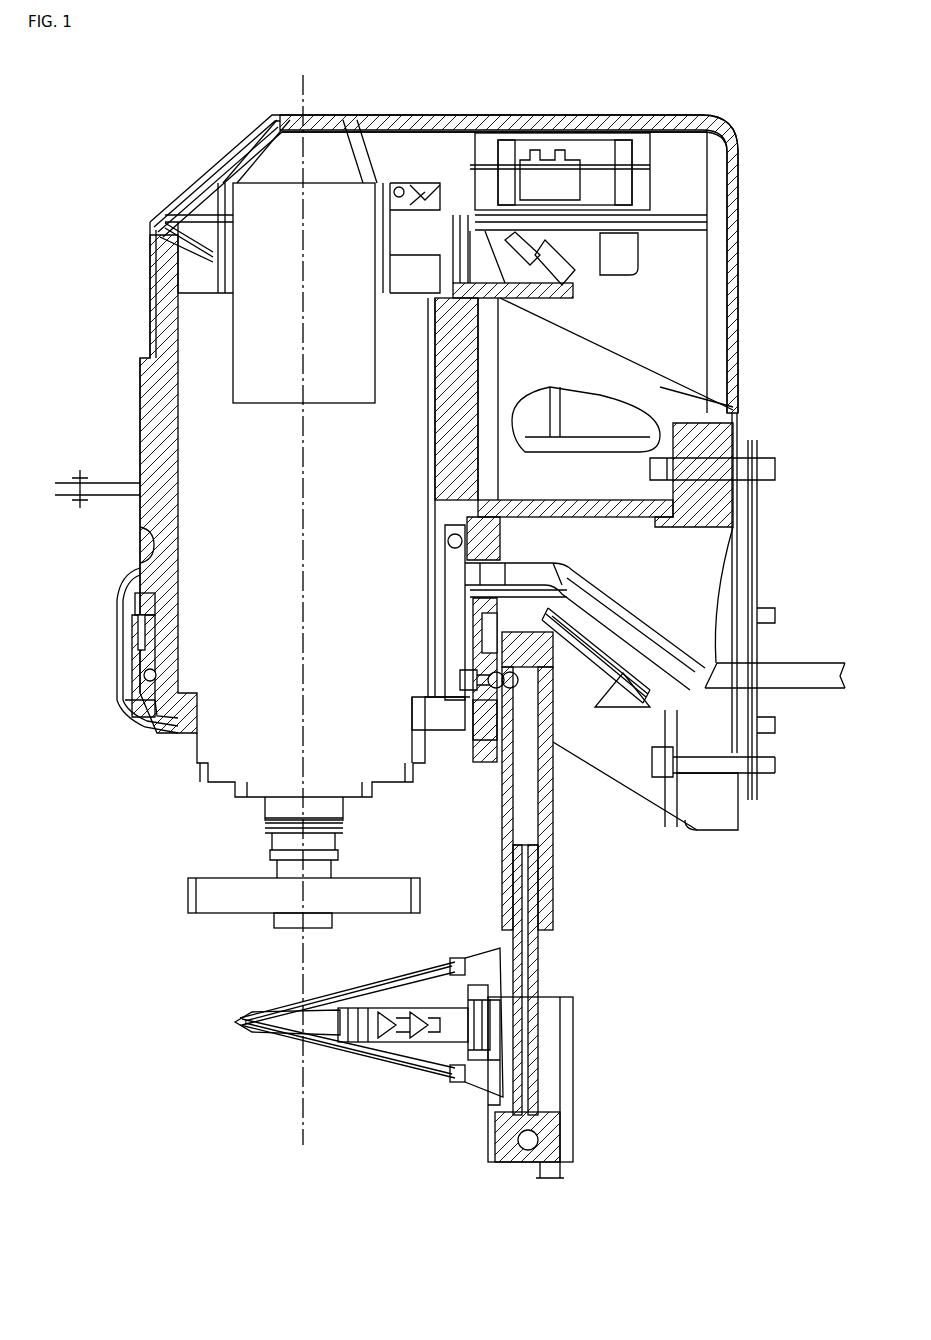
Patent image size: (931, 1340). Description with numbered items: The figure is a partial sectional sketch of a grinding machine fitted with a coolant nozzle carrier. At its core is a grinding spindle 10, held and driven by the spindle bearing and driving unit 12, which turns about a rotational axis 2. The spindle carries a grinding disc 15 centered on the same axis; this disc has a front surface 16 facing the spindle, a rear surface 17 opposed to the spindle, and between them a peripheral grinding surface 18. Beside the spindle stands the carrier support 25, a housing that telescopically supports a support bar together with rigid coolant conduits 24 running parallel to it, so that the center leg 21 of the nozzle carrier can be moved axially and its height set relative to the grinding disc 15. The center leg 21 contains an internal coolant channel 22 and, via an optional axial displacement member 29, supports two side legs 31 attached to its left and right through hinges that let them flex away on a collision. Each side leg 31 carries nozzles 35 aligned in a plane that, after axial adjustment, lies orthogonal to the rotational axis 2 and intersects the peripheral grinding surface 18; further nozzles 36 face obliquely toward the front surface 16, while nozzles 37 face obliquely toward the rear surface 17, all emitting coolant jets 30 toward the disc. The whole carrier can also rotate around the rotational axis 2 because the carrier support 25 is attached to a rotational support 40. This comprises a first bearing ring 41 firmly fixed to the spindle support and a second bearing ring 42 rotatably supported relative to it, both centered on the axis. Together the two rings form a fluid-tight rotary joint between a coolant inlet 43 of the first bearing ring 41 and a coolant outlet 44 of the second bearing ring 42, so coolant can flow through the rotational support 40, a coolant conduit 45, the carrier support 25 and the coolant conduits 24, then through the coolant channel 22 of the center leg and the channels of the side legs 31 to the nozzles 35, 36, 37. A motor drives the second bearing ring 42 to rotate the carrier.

The rotational axis 2 is at (300, 1130).
The grinding spindle 10 is at (350, 809).
The spindle bearing and driving unit 12 is at (276, 481).
The grinding disc 15 is at (267, 893).
The front surface 16 is at (200, 875).
The rear surface 17 is at (200, 915).
The peripheral grinding surface 18 is at (183, 890).
The center leg 21 is at (510, 1163).
The internal coolant channel 22 is at (545, 1163).
The coolant conduit 24 is at (540, 968).
The carrier support 25 is at (553, 880).
The axial displacement member 29 is at (555, 1050).
The coolant jets 30 is at (369, 1030).
The side leg 31 is at (395, 1048).
The nozzle 35 is at (430, 1050).
The nozzle 36 is at (455, 968).
The nozzle 37 is at (465, 1078).
The rotational support 40 is at (266, 693).
The first bearing ring 41 is at (137, 577).
The second bearing ring 42 is at (130, 658).
The coolant inlet 43 is at (427, 568).
The coolant outlet 44 is at (430, 678).
The coolant conduit 45 is at (148, 680).